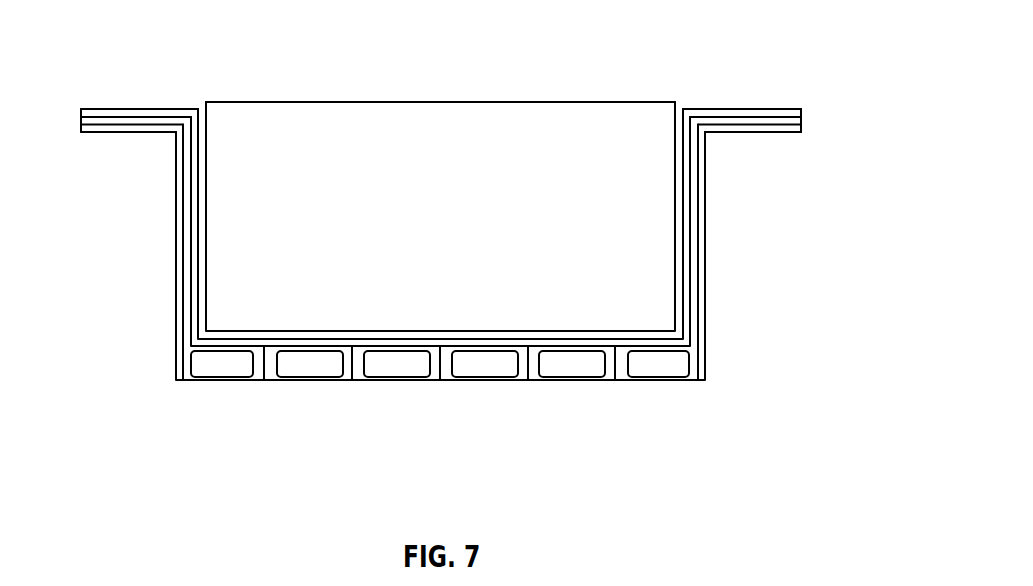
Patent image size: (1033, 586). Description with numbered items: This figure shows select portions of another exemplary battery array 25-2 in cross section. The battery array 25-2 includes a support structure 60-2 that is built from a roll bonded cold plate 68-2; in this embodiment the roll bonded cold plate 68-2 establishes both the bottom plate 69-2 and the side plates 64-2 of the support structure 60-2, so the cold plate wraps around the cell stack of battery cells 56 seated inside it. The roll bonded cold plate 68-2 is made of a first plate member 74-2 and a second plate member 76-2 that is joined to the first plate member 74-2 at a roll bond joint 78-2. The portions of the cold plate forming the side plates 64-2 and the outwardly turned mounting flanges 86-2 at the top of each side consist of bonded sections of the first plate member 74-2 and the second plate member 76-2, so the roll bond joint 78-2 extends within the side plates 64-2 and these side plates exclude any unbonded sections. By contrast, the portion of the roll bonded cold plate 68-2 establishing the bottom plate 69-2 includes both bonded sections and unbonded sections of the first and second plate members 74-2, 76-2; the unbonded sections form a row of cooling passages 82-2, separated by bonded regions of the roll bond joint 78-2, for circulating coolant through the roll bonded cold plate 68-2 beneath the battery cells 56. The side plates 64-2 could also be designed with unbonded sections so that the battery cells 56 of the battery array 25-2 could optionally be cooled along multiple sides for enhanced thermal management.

The battery array 25-2 is at (492, 71).
The battery cells 56 is at (457, 232).
The support structure 60-2 is at (829, 111).
The side plates 64-2 is at (142, 281).
The roll bonded cold plate 68-2 is at (320, 423).
The bottom plate 69-2 is at (432, 382).
The first plate member 74-2 is at (200, 166).
The second plate member 76-2 is at (180, 200).
The roll bond joint 78-2 is at (187, 146).
The cooling passages 82-2 is at (221, 362).
The mounting flanges 86-2 is at (132, 96).